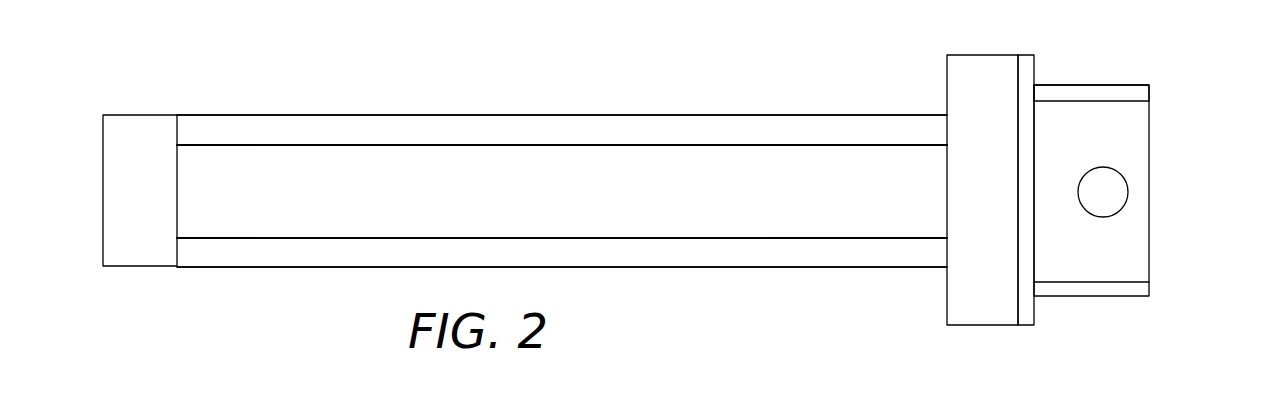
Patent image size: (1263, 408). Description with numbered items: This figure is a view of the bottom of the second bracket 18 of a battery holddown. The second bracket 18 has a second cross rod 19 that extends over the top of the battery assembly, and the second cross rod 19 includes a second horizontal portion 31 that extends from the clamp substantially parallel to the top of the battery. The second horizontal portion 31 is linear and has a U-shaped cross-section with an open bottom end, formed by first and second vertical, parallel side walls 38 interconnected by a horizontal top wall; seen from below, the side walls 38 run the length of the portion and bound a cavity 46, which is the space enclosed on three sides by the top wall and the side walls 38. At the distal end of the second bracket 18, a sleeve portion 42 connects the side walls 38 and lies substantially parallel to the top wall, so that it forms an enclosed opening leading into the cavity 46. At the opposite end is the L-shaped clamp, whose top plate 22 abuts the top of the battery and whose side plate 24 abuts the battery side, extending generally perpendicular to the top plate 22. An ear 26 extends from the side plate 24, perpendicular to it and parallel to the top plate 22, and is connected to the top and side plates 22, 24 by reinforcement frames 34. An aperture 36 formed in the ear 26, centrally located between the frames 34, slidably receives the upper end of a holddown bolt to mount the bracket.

The second bracket 18 is at (562, 184).
The second cross rod 19 is at (553, 153).
The top plate 22 is at (972, 73).
The side plate 24 is at (1025, 65).
The ear 26 is at (1138, 151).
The second horizontal portion 31 is at (408, 158).
The reinforcement frames 34 is at (1125, 88).
The aperture 36 is at (1107, 180).
The side walls 38 is at (848, 122).
The sleeve portion 42 is at (145, 130).
The cavity 46 is at (770, 175).